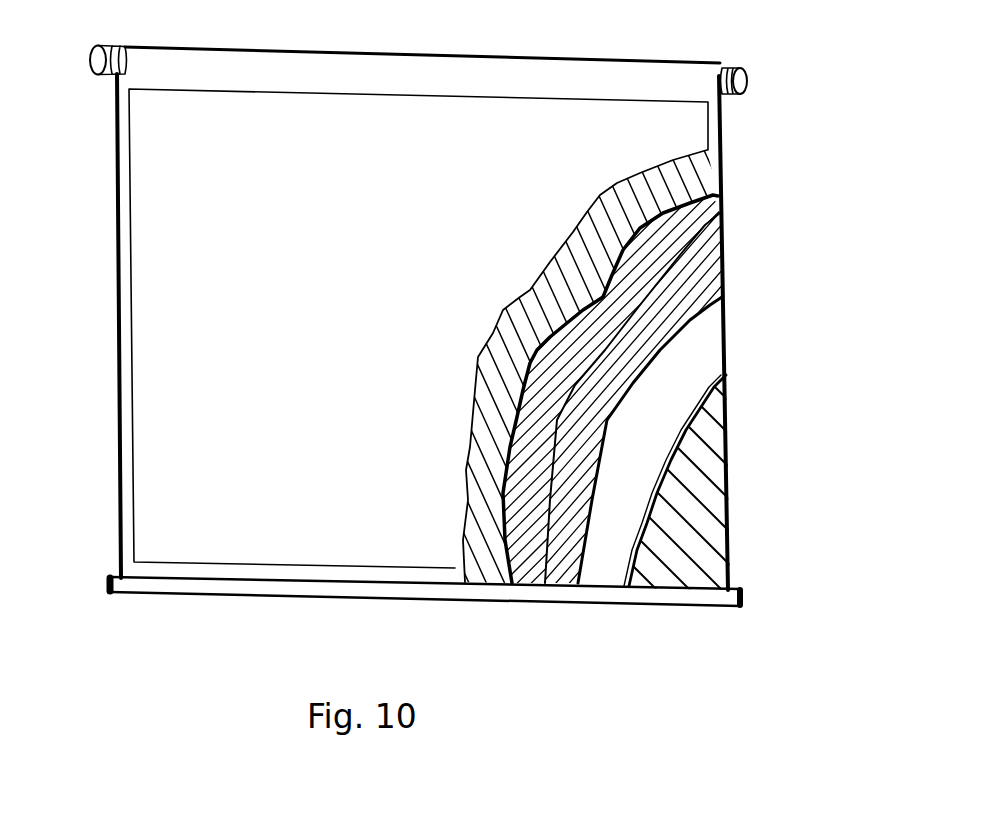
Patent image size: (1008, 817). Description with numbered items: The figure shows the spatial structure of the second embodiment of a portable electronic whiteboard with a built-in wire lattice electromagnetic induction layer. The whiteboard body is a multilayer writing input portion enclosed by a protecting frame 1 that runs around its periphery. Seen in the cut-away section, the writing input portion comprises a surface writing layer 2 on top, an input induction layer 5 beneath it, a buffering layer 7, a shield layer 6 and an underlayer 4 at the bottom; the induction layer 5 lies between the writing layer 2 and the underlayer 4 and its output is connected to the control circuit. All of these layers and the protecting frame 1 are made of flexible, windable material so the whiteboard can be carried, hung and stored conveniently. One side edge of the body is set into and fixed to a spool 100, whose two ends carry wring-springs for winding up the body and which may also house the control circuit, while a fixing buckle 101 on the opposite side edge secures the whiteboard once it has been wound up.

The protecting frame 1 is at (117, 327).
The surface writing layer 2 is at (720, 138).
The underlayer 4 is at (727, 493).
The input induction layer 5 is at (720, 210).
The shield layer 6 is at (675, 380).
The buffering layer 7 is at (722, 296).
The spool 100 is at (750, 72).
The fixing buckle 101 is at (436, 600).